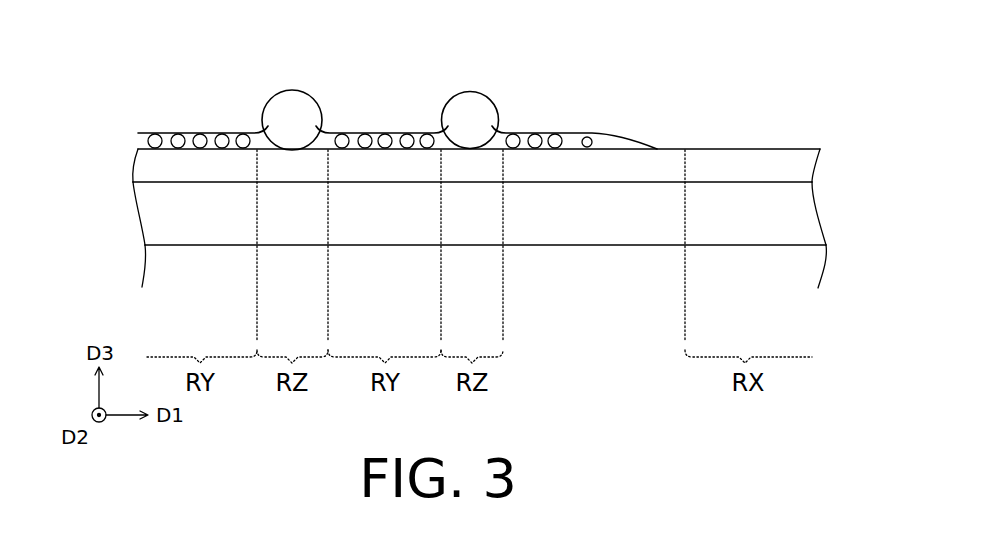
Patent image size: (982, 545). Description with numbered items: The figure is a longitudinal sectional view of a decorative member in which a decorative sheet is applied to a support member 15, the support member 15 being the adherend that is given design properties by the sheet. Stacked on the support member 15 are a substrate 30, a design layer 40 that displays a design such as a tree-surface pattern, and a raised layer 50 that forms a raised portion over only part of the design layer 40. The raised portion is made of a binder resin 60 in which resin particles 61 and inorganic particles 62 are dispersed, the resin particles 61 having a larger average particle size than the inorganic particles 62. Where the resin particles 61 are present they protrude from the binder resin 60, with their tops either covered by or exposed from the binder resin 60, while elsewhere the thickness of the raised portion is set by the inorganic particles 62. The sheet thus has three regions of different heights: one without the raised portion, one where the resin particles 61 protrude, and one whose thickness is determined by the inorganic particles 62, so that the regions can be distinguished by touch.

The support member 15 is at (137, 266).
The substrate 30 is at (129, 217).
The design layer 40 is at (124, 164).
The raised layer 50 is at (431, 84).
The binder resin 60 is at (252, 133).
The resin particles 61 is at (292, 103).
The inorganic particles 62 is at (222, 135).